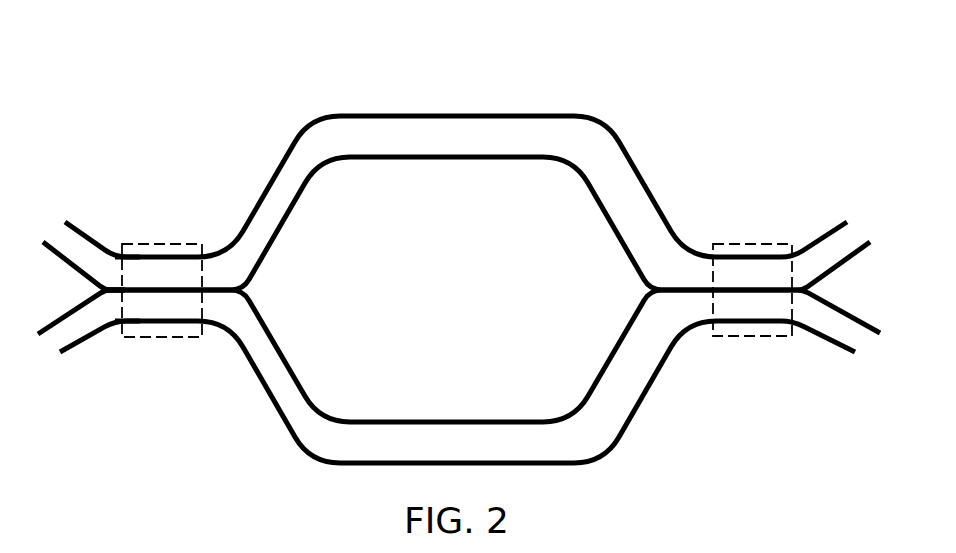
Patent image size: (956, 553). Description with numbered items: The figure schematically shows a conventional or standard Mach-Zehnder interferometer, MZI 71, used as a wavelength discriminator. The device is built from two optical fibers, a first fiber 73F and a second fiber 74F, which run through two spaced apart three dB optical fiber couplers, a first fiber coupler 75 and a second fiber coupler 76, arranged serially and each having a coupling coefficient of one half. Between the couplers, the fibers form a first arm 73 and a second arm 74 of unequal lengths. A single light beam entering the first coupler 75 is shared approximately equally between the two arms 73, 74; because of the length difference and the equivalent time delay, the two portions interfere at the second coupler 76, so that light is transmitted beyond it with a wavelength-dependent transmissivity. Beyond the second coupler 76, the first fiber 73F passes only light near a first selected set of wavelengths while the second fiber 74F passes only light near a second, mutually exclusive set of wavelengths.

The standard MZI 71 is at (566, 89).
The first arm 73 is at (413, 130).
The second arm 74 is at (282, 385).
The first fiber 73F is at (90, 247).
The second fiber 74F is at (78, 332).
The first 3 dB optical fiber coupler 75 is at (165, 332).
The second 3 dB optical fiber coupler 76 is at (755, 337).